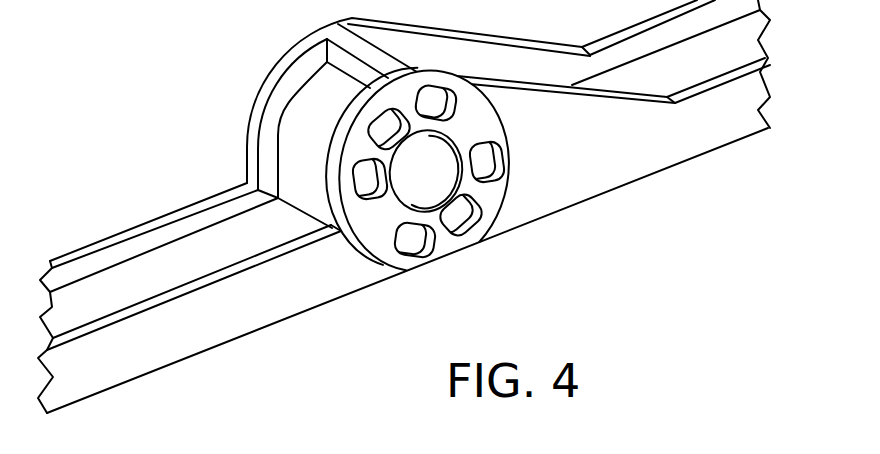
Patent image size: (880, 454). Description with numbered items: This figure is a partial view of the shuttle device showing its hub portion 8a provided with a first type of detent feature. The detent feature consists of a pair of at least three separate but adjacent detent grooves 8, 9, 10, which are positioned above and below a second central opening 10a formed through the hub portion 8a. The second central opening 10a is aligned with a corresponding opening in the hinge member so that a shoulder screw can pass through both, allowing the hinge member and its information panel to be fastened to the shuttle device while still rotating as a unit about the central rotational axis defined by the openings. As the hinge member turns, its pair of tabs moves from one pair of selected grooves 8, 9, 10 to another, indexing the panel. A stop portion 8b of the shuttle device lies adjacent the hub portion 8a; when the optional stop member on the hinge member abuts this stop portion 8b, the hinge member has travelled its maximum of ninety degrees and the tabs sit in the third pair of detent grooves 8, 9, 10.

The detent groove 8 is at (417, 259).
The hub portion 8a is at (318, 106).
The stop portion 8b is at (334, 232).
The detent groove 9 is at (468, 230).
The detent groove 10 is at (503, 169).
The second central opening 10a is at (433, 157).